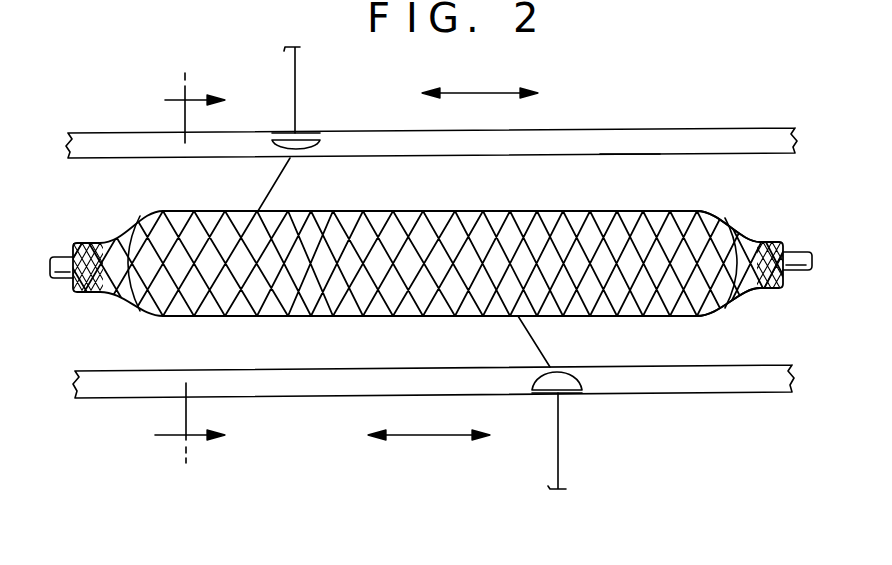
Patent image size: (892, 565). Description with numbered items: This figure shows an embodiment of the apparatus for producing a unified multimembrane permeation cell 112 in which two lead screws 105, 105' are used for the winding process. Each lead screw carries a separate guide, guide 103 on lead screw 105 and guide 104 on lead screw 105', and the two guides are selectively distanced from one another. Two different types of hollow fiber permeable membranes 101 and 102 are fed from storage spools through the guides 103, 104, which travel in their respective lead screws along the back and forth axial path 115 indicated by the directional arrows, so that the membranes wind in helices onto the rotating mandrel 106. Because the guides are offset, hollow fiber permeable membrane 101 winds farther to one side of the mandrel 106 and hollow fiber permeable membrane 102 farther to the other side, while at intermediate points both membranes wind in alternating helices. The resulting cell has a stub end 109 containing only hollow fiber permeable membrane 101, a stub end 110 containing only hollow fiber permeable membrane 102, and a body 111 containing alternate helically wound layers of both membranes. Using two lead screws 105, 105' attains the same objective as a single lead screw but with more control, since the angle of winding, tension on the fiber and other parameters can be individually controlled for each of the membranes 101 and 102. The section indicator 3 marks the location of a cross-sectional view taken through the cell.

The section line 3- 3 is at (190, 269).
The hollow fiber permeable membrane 101 is at (297, 80).
The hollow fiber permeable membrane 102 is at (558, 466).
The guide 103 is at (283, 143).
The guide 104 is at (565, 392).
The lead screw 105 is at (437, 121).
The lead screw 105' is at (436, 399).
The mandrel 106 is at (790, 258).
The stub end 109 is at (100, 248).
The stub end 110 is at (742, 235).
The body 111 is at (535, 232).
The unified multimembrane permeation cell 112 is at (618, 172).
The axial path 115 is at (507, 92).